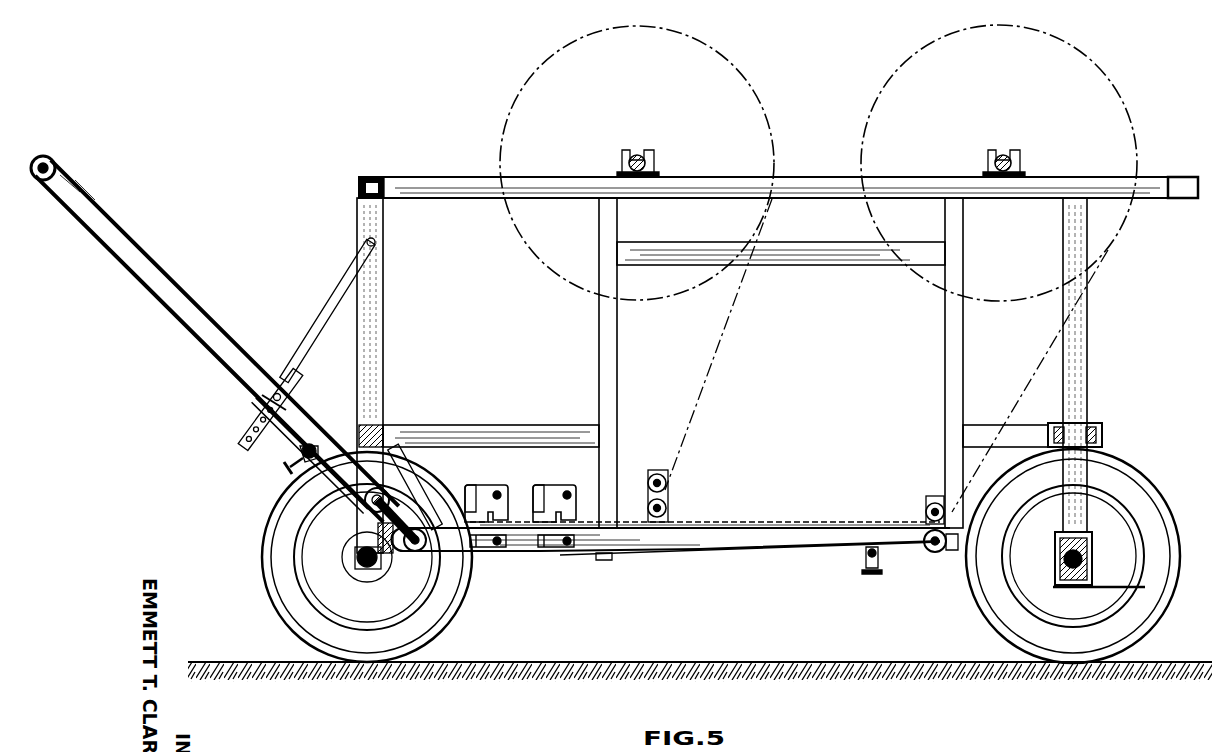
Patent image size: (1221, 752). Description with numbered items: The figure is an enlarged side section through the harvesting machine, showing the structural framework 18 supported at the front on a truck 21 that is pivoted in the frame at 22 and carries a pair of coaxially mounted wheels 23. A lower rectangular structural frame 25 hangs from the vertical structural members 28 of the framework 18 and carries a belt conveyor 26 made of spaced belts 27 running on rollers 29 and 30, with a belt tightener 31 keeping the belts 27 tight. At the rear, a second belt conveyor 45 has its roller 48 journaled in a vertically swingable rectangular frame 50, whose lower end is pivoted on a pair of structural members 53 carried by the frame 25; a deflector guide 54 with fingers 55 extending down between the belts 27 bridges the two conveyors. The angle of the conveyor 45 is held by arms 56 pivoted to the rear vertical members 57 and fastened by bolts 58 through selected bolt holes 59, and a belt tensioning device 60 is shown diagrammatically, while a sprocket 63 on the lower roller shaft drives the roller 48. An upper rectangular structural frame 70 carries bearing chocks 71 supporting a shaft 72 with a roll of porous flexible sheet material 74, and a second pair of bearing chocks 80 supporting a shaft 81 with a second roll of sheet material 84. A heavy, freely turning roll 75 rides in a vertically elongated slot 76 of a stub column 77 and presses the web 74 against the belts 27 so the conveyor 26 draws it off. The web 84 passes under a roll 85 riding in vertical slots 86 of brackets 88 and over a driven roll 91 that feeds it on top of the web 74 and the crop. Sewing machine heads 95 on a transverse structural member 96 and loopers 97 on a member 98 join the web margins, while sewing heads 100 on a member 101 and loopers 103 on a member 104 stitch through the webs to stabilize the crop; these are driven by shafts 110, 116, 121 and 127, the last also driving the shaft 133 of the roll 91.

The structural framework 18 is at (832, 165).
The truck 21 is at (1093, 556).
The truck pivot 22 is at (1090, 424).
The wheels 23 is at (1178, 562).
The rectangular structural frame 25 is at (700, 543).
The belt conveyor 26 is at (768, 522).
The belts 27 is at (765, 553).
The vertical structural members 28 is at (618, 355).
The roller 29 is at (935, 553).
The roller 30 is at (372, 566).
The belt tightener 31 is at (864, 572).
The second belt conveyor 45 is at (178, 276).
The roller 48 is at (56, 165).
The vertically swingable rectangular frame 50 is at (70, 178).
The structural members 53 is at (376, 540).
The deflector guide 54 is at (420, 478).
The fingers 55 is at (414, 551).
The arms 56 is at (330, 300).
The rear vertical members 57 is at (372, 356).
The bolts 58 is at (258, 397).
The bolt holes 59 is at (243, 440).
The belt tensioning device 60 is at (283, 468).
The sprocket 63 is at (362, 497).
The rectangular structural frame 70 is at (378, 210).
The bearing chocks 71 is at (1024, 165).
The shaft 72 is at (1006, 155).
The flexible sheet material 74 is at (1040, 368).
The roll 75 is at (928, 512).
The slot 76 is at (926, 508).
The stub column 77 is at (935, 496).
The bearing chocks 80 is at (656, 165).
The shaft 81 is at (640, 155).
The flexible sheet material 84 is at (720, 360).
The roll 85 is at (650, 480).
The vertical slots 86 is at (670, 475).
The brackets 88 is at (660, 470).
The roll 91 is at (668, 511).
The sewing machine heads 95 is at (563, 485).
The transverse structural member 96 is at (538, 485).
The looping devices 97 is at (569, 548).
The transverse structural member 98 is at (544, 548).
The sewing machine heads 100 is at (487, 485).
The transverse structural member 101 is at (470, 485).
The looper devices 103 is at (482, 548).
The transverse structural member 104 is at (440, 552).
The shaft 110 is at (500, 548).
The shaft 116 is at (501, 495).
The shaft 121 is at (600, 557).
The shaft 127 is at (571, 495).
The shaft 133 is at (663, 503).